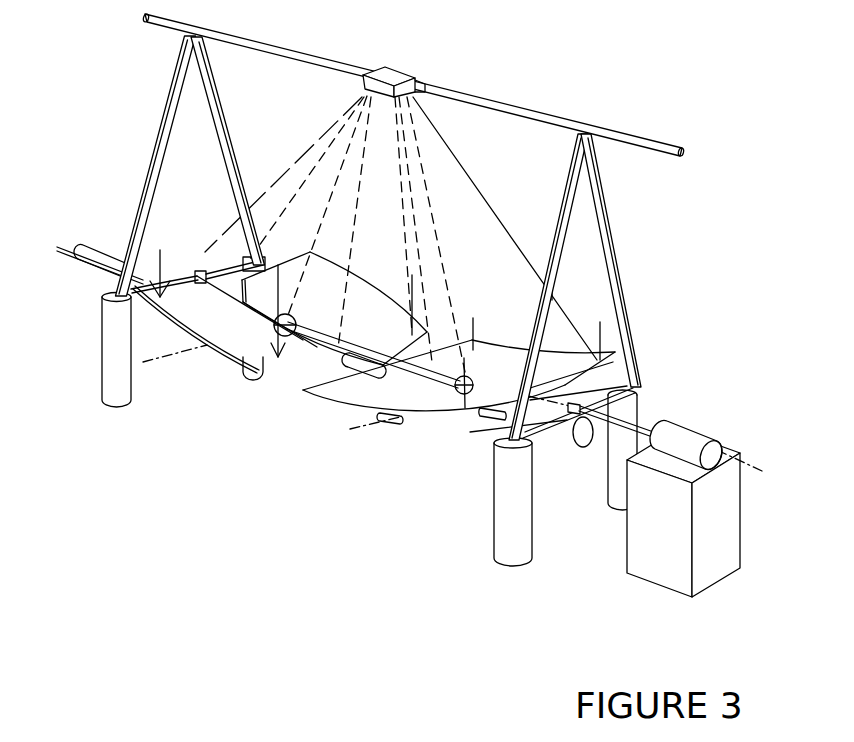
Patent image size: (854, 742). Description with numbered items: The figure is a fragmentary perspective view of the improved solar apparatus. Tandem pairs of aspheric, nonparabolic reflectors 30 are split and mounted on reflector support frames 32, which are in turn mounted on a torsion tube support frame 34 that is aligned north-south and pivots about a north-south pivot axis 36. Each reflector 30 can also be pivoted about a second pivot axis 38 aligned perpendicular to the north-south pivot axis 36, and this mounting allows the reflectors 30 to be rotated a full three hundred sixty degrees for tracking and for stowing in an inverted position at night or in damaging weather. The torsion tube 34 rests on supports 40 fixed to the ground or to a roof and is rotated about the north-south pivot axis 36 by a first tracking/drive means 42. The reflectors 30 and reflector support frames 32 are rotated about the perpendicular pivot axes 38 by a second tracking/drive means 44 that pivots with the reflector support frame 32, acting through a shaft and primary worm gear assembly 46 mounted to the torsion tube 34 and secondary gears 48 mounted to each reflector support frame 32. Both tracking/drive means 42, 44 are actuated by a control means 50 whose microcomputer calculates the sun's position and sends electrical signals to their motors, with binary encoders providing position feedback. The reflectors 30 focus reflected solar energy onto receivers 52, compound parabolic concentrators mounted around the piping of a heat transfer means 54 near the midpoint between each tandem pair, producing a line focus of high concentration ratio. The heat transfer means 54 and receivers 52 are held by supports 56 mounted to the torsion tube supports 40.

The reflectors 30 is at (497, 316).
The reflector support frame 32 is at (227, 360).
The torsion tube support frame 34 is at (583, 448).
The north-south pivot axis 36 is at (745, 475).
The second pivot axis 38 is at (182, 350).
The supports 40 is at (100, 371).
The first tracking/drive means 42 is at (690, 428).
The second tracking/drive means 44 is at (300, 382).
The shaft and primary worm gear assembly 46 is at (493, 413).
The secondary gears 48 is at (284, 318).
The control means 50 is at (742, 535).
The receivers 52 is at (400, 68).
The heat transfer means 54 is at (510, 105).
The supports 56 is at (155, 130).